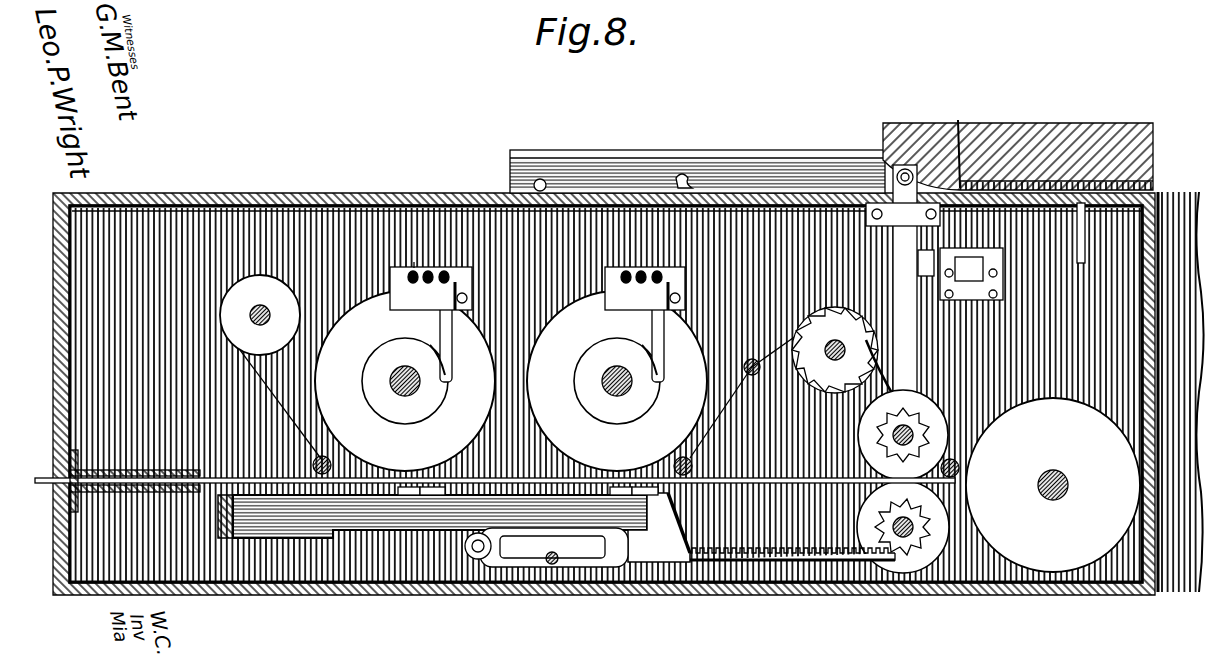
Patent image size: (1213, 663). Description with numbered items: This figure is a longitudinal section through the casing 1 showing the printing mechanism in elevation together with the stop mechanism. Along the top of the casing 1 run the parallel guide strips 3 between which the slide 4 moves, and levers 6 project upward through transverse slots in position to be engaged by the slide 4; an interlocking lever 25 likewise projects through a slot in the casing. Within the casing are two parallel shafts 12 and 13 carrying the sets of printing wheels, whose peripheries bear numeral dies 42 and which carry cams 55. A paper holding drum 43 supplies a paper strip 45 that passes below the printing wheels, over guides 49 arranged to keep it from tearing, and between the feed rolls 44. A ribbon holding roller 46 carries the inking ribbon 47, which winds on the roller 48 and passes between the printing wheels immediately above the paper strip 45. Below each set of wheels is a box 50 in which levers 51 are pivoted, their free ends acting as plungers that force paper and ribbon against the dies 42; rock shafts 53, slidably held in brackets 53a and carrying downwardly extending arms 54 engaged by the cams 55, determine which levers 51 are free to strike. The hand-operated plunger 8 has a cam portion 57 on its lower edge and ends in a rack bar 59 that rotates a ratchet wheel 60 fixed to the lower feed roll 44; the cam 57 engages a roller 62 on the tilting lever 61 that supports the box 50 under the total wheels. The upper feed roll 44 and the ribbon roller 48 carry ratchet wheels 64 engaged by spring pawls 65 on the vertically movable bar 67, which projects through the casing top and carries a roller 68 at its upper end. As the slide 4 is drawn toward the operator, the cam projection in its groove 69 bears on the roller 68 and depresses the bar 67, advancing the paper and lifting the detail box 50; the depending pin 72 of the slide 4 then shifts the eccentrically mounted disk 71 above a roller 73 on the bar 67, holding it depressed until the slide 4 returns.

The casing 1 is at (255, 193).
The guide strips 3 is at (765, 158).
The slide 4 is at (1032, 128).
The levers 6 is at (534, 183).
The hand-operated plunger 8 is at (246, 585).
The shaft 12 is at (608, 392).
The shaft 13 is at (402, 391).
The interlocking lever 25 is at (683, 176).
The dies 42 is at (345, 350).
The paper holding drum 43 is at (1053, 485).
The feed rolls 44 is at (870, 463).
The paper strip 45 is at (800, 472).
The ribbon holding roller 46 is at (260, 315).
The inking ribbon 47 is at (325, 460).
The ribbon winding roller 48 is at (835, 350).
The guides 49 is at (68, 470).
The box 50 is at (435, 494).
The levers 51 is at (405, 494).
The rock shafts 53 is at (444, 284).
The brackets 53a is at (428, 262).
The arms 54 is at (453, 360).
The cams 55 is at (511, 381).
The cam portion 57 is at (342, 546).
The rack bar 59 is at (805, 563).
The ratchet wheel 60 is at (945, 520).
The tilting lever 61 is at (602, 566).
The roller 62 is at (470, 556).
The ratchet wheels 64 is at (956, 428).
The spring pawls 65 is at (915, 385).
The vertically movable bar 67 is at (892, 360).
The roller 68 is at (882, 162).
The cam groove 69 is at (959, 122).
The eccentrically mounted disk 71 is at (935, 250).
The depending pin 72 is at (1085, 228).
The roller 73 is at (925, 276).